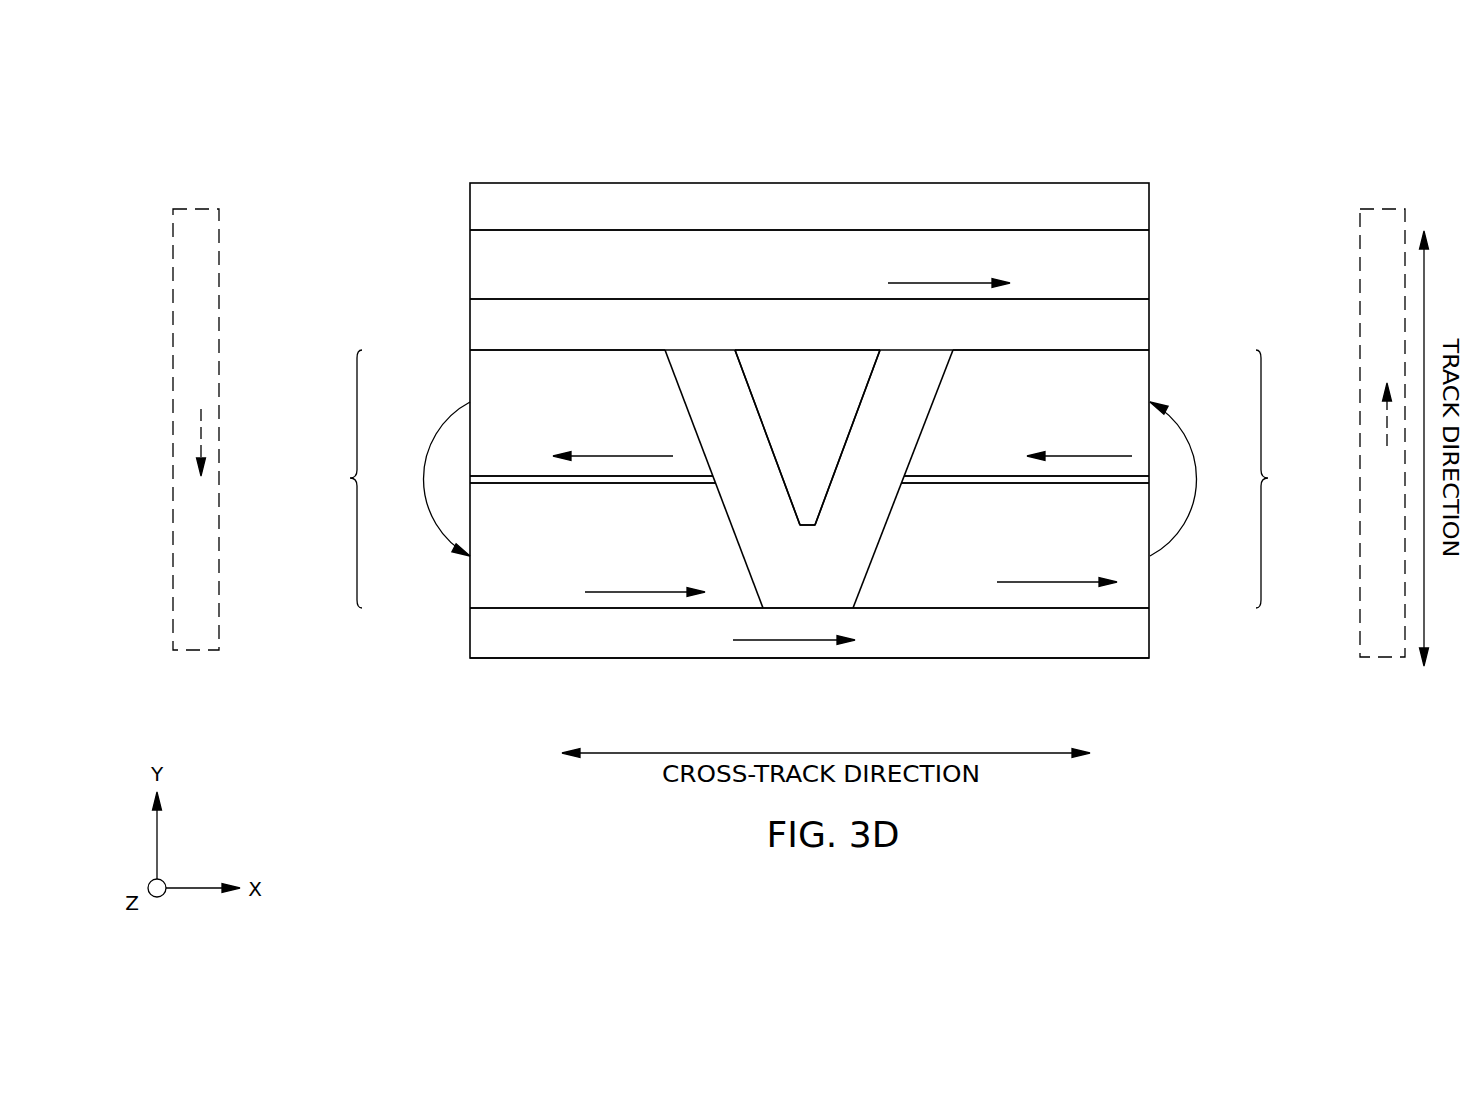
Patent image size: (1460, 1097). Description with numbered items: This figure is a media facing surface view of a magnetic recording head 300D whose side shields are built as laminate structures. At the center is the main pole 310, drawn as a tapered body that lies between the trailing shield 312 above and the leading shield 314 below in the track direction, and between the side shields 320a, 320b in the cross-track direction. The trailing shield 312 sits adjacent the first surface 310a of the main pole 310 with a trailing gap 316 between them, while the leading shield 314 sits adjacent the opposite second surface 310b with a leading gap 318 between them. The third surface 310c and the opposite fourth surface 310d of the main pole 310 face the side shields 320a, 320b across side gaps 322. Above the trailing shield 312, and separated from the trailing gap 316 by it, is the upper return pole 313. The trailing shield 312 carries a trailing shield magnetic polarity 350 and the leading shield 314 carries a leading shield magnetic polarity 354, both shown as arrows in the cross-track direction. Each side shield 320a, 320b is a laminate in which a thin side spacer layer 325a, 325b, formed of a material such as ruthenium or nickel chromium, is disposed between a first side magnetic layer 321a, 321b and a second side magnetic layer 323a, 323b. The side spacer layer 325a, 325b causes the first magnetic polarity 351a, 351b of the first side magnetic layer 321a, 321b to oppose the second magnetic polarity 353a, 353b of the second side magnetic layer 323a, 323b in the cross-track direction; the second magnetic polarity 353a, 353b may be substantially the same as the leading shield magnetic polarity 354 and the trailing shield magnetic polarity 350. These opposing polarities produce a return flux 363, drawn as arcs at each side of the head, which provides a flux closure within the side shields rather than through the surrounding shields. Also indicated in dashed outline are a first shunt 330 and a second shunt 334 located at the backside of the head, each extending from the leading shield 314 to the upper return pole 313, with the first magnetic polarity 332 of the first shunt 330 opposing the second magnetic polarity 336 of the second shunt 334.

The magnetic recording head 300D is at (485, 135).
The upper return pole 313 is at (848, 222).
The trailing shield 312 is at (788, 279).
The trailing gap 316 is at (788, 339).
The trailing shield magnetic polarity 350 is at (940, 283).
The leading shield 314 is at (943, 650).
The leading shield magnetic polarity 354 is at (793, 643).
The main pole 310 is at (788, 445).
The first surface 310a is at (848, 355).
The second surface 310b is at (805, 523).
The third surface 310c is at (751, 395).
The fourth surface 310d is at (866, 390).
The side gaps 322 is at (723, 473).
The leading gap 318 is at (790, 583).
The first side magnetic layer 321a is at (581, 390).
The first side magnetic layer 321b is at (1053, 390).
The first magnetic polarity 351a is at (615, 456).
The first magnetic polarity 351b is at (1090, 456).
The side spacer layer 325a is at (550, 484).
The side spacer layer 325b is at (980, 484).
The second side magnetic layer 323a is at (581, 560).
The second side magnetic layer 323b is at (1000, 560).
The second magnetic polarity 353a is at (652, 592).
The second magnetic polarity 353b is at (1086, 582).
The side shield 320a is at (325, 479).
The side shield 320b is at (1295, 479).
The return flux 363 is at (435, 526).
The first shunt 330 is at (173, 274).
The first magnetic polarity 332 is at (203, 430).
The second shunt 334 is at (1360, 235).
The second magnetic polarity 336 is at (1385, 422).